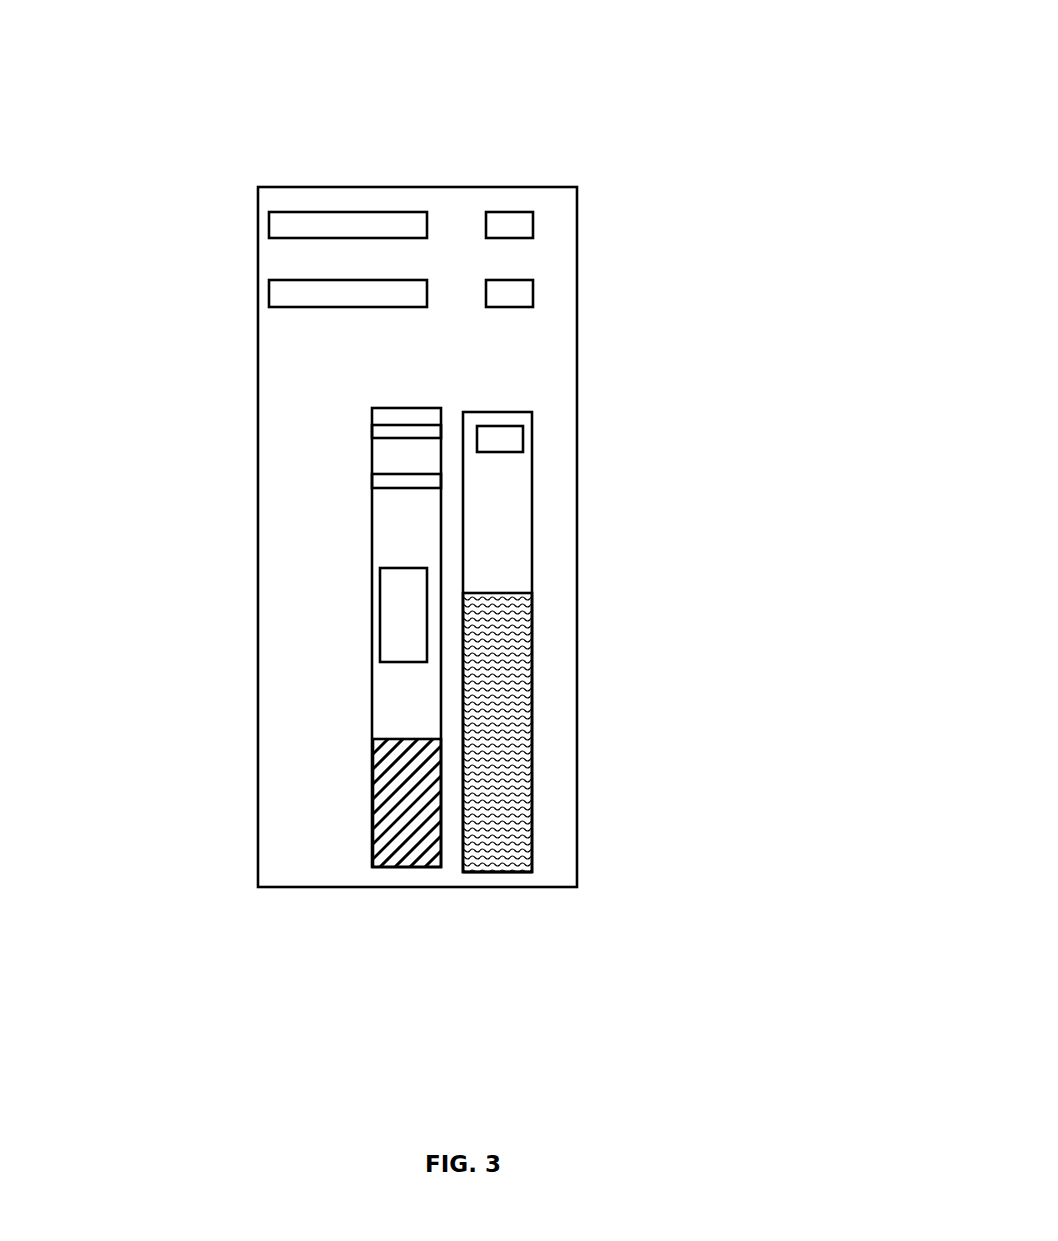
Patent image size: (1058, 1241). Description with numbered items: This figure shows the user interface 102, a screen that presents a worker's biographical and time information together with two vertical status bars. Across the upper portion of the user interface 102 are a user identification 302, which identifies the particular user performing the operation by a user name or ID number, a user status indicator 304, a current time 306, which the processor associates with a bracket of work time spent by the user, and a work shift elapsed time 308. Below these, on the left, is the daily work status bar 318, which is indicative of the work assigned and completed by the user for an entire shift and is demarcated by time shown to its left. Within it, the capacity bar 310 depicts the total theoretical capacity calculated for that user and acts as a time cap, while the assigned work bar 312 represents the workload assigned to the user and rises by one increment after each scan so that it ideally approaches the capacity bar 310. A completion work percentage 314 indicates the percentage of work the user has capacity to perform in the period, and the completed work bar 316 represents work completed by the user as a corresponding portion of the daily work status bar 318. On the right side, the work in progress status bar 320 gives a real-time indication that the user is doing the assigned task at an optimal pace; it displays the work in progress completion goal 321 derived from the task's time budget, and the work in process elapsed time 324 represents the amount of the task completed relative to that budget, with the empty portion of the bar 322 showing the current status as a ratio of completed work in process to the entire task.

The user interface 102 is at (652, 58).
The user identification 302 is at (269, 222).
The user status indicator 304 is at (535, 222).
The current time 306 is at (535, 290).
The work shift elapsed time 308 is at (269, 292).
The capacity bar 310 is at (405, 432).
The assigned work bar 312 is at (400, 478).
The completion work percentage 314 is at (372, 588).
The completed work bar 316 is at (372, 765).
The daily work status bar 318 is at (398, 872).
The work in progress status bar 320 is at (505, 877).
The work in progress completion goal 321 is at (510, 430).
The bar 322 is at (533, 472).
The work in process elapsed time 324 is at (515, 715).